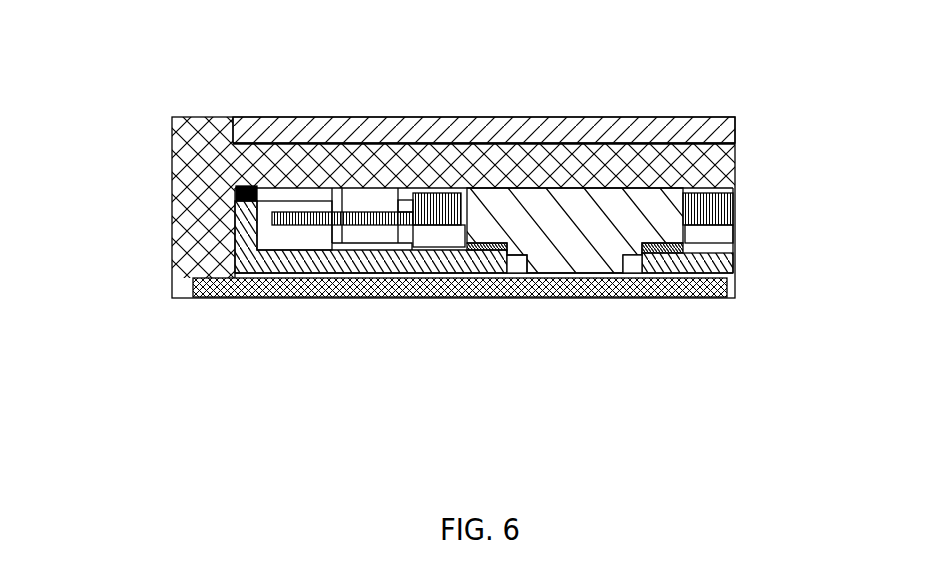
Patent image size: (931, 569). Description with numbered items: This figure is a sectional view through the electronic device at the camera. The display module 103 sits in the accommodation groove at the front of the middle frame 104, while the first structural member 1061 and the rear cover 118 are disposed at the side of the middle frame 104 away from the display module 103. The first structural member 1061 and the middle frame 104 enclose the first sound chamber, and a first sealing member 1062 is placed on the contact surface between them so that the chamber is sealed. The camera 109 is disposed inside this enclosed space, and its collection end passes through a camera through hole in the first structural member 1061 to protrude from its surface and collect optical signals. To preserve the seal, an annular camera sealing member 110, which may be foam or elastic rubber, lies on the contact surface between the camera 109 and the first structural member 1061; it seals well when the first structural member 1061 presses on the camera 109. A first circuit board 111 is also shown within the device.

The display module 103 is at (397, 135).
The middle frame 104 is at (488, 165).
The camera 109 is at (566, 218).
The camera sealing member 110 is at (663, 252).
The first circuit board 111 is at (733, 224).
The rear cover 118 is at (384, 286).
The first structural member 1061 is at (441, 257).
The first sealing member 1062 is at (236, 191).